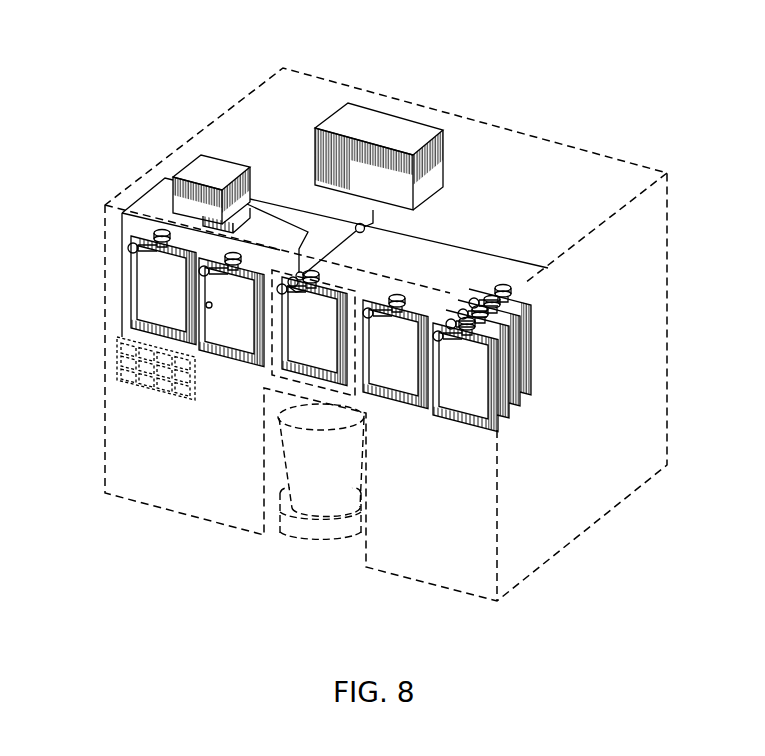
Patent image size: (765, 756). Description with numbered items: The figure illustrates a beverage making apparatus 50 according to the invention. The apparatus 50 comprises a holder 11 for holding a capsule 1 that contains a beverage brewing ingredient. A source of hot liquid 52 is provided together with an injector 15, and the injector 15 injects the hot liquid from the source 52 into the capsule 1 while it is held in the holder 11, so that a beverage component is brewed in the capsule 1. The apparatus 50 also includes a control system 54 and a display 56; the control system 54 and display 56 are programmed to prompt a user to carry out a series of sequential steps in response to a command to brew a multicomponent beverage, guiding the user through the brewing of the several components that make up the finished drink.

The beverage making apparatus 50 is at (594, 49).
The source of hot liquid 52 is at (412, 133).
The control system 54 is at (207, 165).
The injector 15 is at (367, 223).
The holder 11 is at (335, 278).
The capsule 1 is at (153, 313).
The display 56 is at (120, 367).